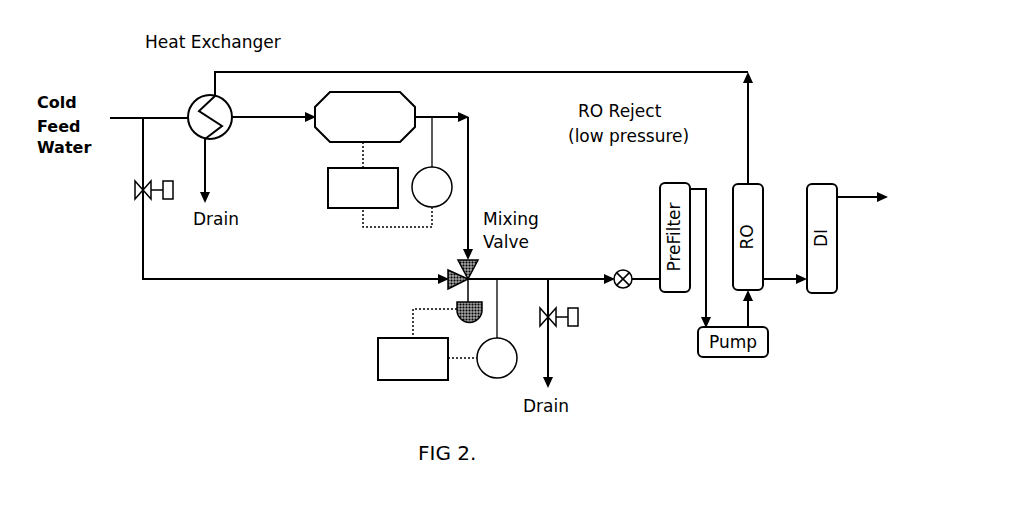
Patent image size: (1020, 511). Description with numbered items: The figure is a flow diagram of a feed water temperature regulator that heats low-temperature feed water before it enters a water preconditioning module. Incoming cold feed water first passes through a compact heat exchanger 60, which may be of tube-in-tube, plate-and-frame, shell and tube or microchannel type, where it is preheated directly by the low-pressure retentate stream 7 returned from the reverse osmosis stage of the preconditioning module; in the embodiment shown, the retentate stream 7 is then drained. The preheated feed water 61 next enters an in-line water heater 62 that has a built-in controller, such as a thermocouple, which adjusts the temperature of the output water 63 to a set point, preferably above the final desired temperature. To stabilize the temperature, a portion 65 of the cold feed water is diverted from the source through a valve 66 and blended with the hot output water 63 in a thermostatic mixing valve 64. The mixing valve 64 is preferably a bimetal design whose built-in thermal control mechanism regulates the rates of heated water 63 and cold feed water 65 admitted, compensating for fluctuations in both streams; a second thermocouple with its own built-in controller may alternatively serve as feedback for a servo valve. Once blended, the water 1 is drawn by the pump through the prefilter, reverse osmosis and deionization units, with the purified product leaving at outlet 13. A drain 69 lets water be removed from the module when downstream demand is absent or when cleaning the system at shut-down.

The water 1 is at (580, 275).
The retentate stream 7 is at (484, 114).
The purified water outlet from DI 13 is at (852, 198).
The heat exchanger 60 is at (188, 108).
The preheated feed water 61 is at (274, 107).
The in-line water heater 62 is at (318, 129).
The output water 63 is at (444, 178).
The thermostatic mixing valve 64 is at (456, 262).
The portion of the cold feed water 65 is at (296, 201).
The valve 66 is at (135, 193).
The drain 69 is at (557, 327).